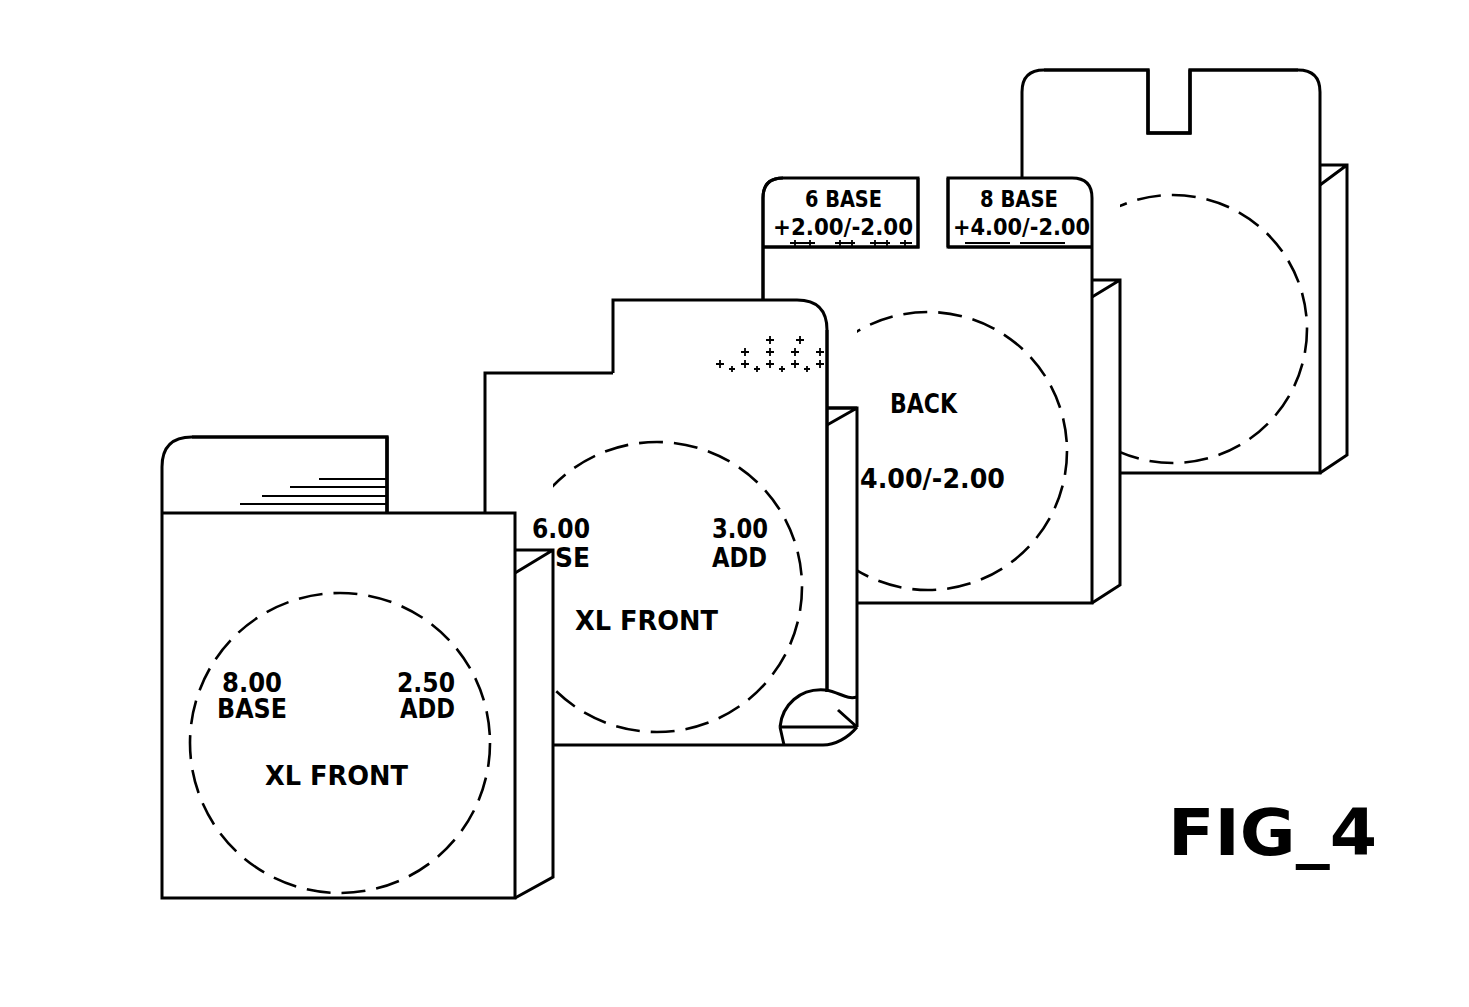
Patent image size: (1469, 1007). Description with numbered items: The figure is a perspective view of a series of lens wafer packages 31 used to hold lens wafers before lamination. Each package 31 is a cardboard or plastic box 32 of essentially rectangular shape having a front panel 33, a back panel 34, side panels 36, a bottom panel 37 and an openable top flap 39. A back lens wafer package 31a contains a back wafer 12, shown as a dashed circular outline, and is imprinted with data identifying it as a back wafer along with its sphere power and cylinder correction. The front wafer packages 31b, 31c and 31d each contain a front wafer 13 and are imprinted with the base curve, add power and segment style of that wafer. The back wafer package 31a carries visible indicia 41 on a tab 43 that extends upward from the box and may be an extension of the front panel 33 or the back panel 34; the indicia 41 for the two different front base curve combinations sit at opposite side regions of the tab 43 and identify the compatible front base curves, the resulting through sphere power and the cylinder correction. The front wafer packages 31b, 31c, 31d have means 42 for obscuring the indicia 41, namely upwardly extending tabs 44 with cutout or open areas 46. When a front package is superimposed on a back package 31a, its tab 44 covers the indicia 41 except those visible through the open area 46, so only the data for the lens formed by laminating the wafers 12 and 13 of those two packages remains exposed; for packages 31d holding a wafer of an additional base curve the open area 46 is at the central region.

The back lens wafer 12 is at (997, 330).
The front lens wafer 13 is at (392, 597).
The lens wafer package 31 is at (1370, 188).
The back lens wafer package 31a is at (1145, 546).
The front wafer package 31b is at (885, 706).
The front wafer package 31c is at (575, 834).
The front wafer package 31d is at (1360, 401).
The box 32 is at (857, 525).
The front panel 33 is at (808, 481).
The back panel 34 is at (838, 710).
The side panel 36 is at (848, 645).
The bottom panel 37 is at (817, 737).
The openable top flap 39 is at (838, 413).
The indicia 41 is at (818, 178).
The means for obscuring the indicia 42 is at (166, 405).
The tab 43 is at (763, 216).
The tab 44 is at (257, 462).
The open area 46 is at (388, 468).